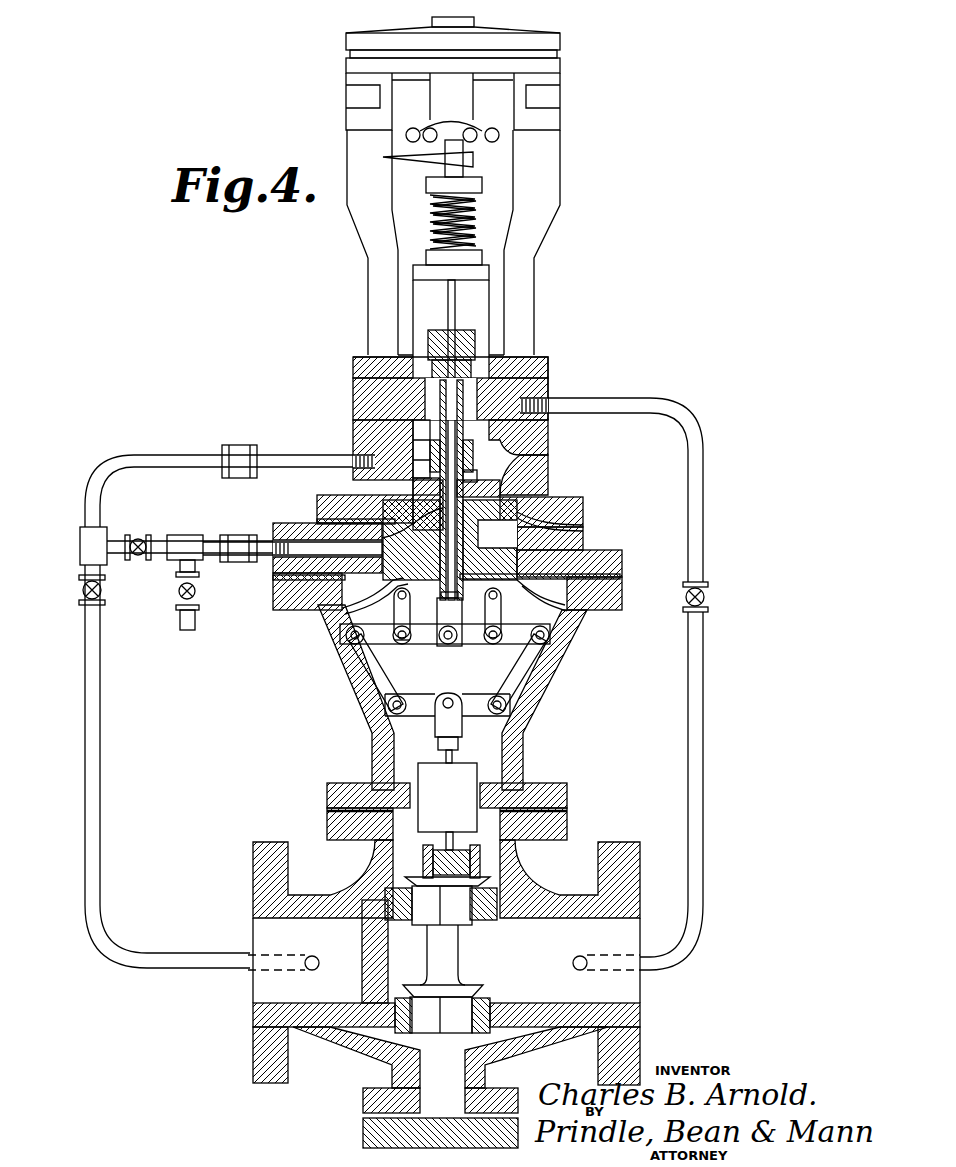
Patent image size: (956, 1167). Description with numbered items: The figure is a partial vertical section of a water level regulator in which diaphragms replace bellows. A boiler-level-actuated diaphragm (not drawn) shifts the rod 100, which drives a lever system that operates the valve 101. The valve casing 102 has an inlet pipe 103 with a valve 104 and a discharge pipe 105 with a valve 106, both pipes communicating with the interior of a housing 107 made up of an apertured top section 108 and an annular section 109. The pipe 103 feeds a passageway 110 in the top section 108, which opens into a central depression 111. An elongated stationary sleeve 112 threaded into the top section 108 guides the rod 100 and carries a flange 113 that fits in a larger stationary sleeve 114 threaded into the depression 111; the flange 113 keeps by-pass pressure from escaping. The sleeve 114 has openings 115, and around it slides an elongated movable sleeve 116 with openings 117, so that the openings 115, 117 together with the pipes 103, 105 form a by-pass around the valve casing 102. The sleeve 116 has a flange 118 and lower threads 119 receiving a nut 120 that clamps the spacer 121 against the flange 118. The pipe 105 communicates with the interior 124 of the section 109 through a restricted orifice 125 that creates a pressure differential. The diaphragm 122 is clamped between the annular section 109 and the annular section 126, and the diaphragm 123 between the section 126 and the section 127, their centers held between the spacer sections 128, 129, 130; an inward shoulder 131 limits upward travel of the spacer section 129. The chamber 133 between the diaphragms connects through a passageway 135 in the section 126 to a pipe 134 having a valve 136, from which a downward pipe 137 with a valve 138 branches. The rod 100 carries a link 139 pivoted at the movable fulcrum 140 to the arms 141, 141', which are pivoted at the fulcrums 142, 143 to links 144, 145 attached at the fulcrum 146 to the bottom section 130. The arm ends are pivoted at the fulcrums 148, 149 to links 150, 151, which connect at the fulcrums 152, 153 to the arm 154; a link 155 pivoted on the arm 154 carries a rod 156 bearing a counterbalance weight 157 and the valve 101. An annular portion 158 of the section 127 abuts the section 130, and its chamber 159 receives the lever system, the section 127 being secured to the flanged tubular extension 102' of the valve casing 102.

The rod 100 is at (453, 302).
The valve 101 is at (477, 960).
The valve casing 102 is at (466, 994).
The flanged tubular extension 102' is at (479, 823).
The pipe 103 is at (703, 692).
The valve 104 is at (706, 598).
The pipe 105 is at (85, 760).
The valve 106 is at (80, 592).
The housing 107 is at (573, 366).
The apertured top section 108 is at (363, 388).
The annular section 109 is at (340, 472).
The passageway 110 is at (552, 393).
The central depression 111 is at (515, 368).
The elongated stationary sleeve 112 is at (520, 356).
The flange 113 is at (465, 452).
The stationary sleeve 114 is at (520, 425).
The openings 115 is at (395, 426).
The elongated movable sleeve 116 is at (545, 490).
The openings 117 is at (402, 448).
The flange 118 is at (478, 478).
The threads 119 is at (462, 620).
The nut 120 is at (408, 618).
The spacer 121 is at (560, 500).
The diaphragm 122 is at (577, 540).
The diaphragm 123 is at (620, 594).
The interior 124 is at (368, 405).
The restricted orifice 125 is at (410, 466).
The annular section 126 is at (262, 545).
The section 127 is at (295, 592).
The spacer section 128 is at (365, 500).
The spacer section 129 is at (430, 531).
The bottom section 130 is at (580, 562).
The shoulder 131 is at (290, 562).
The chamber 133 is at (545, 516).
The pipe 134 is at (182, 540).
The passageway 135 is at (300, 547).
The valve 136 is at (138, 536).
The pipe 137 is at (184, 622).
The valve 138 is at (180, 594).
The link 139 is at (402, 645).
The movable fulcrum 140 is at (447, 645).
The arm 141 is at (445, 661).
The arm 141' is at (498, 634).
The movable fulcrum 142 is at (390, 708).
The movable fulcrum 143 is at (549, 640).
The link 144 is at (392, 644).
The link 145 is at (562, 625).
The movable fulcrum 146 is at (398, 622).
The movable fulcrum 148 is at (352, 644).
The movable fulcrum 149 is at (503, 637).
The link 150 is at (378, 706).
The link 151 is at (520, 692).
The movable fulcrum 152 is at (400, 734).
The movable fulcrum 153 is at (507, 703).
The arm 154 is at (512, 712).
The link 155 is at (440, 735).
The rod 156 is at (458, 752).
The counterbalance weight 157 is at (490, 790).
The annular portion 158 is at (380, 608).
The chamber 159 is at (400, 792).